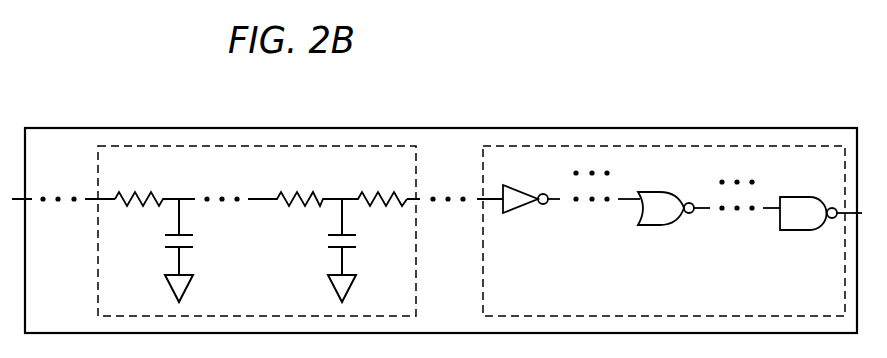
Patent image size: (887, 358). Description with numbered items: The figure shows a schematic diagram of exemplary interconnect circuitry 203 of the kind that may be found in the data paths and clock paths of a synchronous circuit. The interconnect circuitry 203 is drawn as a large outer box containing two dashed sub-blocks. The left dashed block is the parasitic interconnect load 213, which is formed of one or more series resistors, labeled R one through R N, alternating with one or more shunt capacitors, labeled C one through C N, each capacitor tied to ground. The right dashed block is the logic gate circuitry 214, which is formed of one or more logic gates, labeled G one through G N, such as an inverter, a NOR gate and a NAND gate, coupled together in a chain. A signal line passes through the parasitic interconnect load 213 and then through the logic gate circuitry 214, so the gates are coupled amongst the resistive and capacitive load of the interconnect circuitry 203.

The interconnect circuitry 203 is at (800, 127).
The parasitic interconnect load 213 is at (152, 145).
The logic gate circuitry 214 is at (518, 145).